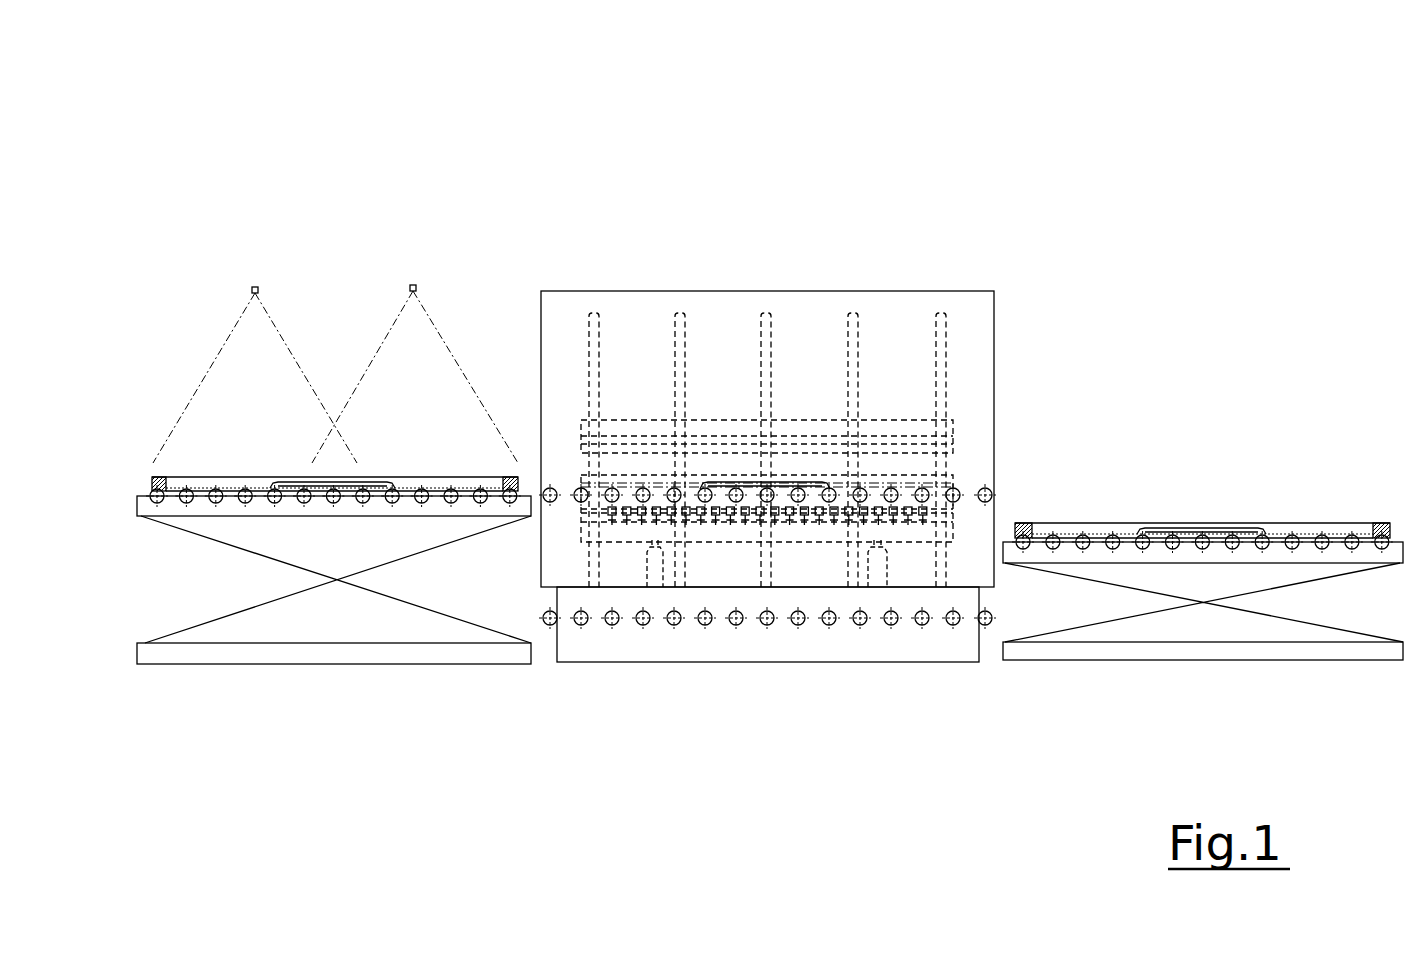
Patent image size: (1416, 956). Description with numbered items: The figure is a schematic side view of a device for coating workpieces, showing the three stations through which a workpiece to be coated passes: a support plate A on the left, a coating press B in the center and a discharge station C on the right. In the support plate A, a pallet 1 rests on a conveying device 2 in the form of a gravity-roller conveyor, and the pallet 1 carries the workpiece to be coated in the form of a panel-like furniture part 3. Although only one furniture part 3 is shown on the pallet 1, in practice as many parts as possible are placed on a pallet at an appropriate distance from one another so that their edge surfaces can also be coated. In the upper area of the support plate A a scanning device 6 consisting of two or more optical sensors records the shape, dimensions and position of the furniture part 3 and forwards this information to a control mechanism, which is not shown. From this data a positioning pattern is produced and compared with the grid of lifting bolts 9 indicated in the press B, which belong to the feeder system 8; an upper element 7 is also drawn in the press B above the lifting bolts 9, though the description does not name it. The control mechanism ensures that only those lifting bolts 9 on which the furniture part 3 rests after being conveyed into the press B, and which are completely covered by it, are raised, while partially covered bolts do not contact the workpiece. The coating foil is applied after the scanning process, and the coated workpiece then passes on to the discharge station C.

The pallet 1 is at (155, 480).
The conveying device 2 is at (153, 497).
The furniture part 3 is at (293, 478).
The scanning device 6 is at (252, 280).
The upper dashed beam 7 is at (955, 427).
The feeder system 8 is at (953, 513).
The lifting bolts 9 is at (612, 507).
The support plate A is at (333, 235).
The coating press B is at (785, 235).
The discharge station C is at (1214, 215).